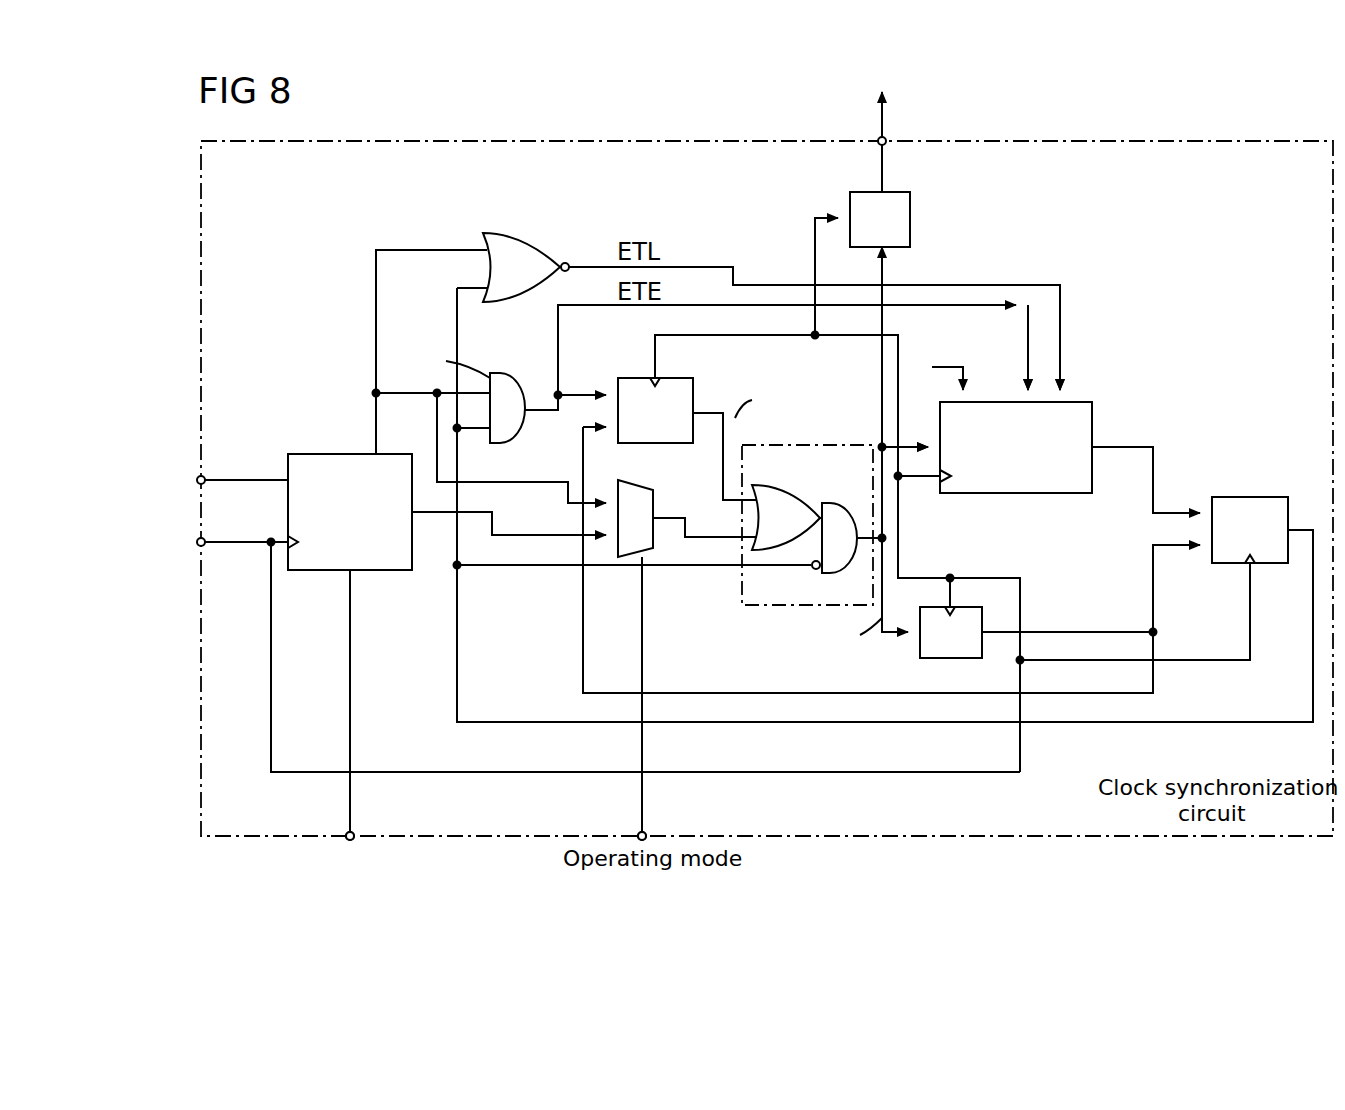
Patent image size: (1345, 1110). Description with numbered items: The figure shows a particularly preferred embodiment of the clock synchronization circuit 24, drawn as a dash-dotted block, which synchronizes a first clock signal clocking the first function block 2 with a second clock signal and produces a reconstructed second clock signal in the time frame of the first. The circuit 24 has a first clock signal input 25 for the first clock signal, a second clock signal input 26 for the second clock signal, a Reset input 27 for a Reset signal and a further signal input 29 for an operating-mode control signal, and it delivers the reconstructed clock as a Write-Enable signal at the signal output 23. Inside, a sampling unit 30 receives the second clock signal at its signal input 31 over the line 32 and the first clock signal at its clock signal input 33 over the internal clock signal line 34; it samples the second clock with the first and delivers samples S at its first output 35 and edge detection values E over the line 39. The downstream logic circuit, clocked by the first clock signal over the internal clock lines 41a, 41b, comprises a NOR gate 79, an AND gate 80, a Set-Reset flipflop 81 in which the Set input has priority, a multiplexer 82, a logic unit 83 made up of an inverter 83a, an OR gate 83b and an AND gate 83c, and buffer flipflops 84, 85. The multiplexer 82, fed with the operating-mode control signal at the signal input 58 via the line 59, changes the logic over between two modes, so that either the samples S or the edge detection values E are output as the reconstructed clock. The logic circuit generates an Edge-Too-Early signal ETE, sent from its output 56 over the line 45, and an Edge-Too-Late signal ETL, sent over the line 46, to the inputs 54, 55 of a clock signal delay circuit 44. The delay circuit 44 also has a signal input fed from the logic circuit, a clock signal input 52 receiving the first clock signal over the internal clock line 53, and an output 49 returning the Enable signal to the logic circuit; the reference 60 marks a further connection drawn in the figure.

The first function block 2 is at (877, 192).
The signal output 23 is at (887, 135).
The clock synchronization circuit 24 is at (767, 488).
The first clock signal input 25 is at (198, 546).
The second clock signal input 26 is at (198, 484).
The Reset input 27 is at (354, 832).
The signal input 29 is at (646, 832).
The sampling unit 30 is at (350, 512).
The signal input 31 is at (288, 476).
The line 32 is at (226, 480).
The clock signal input 33 is at (288, 540).
The internal clock signal line 34 is at (229, 546).
The first output 35 is at (414, 515).
The line 39 is at (375, 450).
The internal clock line 41a is at (770, 338).
The internal clock line 41b is at (1195, 660).
The clock signal delay circuit 44 is at (1100, 430).
The line 45 is at (972, 302).
The line 46 is at (1033, 282).
The output 49 is at (1096, 445).
The clock signal input 52 is at (940, 478).
The internal clock line 53 is at (1022, 745).
The input 54 is at (1025, 400).
The input 55 is at (1070, 400).
The output 56 is at (1268, 565).
The signal input 58 is at (645, 552).
The line 59 is at (641, 752).
The reset/enable line 60 is at (350, 573).
The NOR gate 79 is at (525, 235).
The AND gate 80 is at (522, 428).
The Set-Reset flipflop 81 is at (665, 445).
The multiplexer 82 is at (597, 475).
The logic unit 83 is at (812, 525).
The inverter 83a is at (812, 568).
The OR gate 83b is at (786, 517).
The AND gate 83c is at (836, 505).
The buffer flipflop 84 is at (861, 215).
The buffer flipflop 85 is at (954, 629).